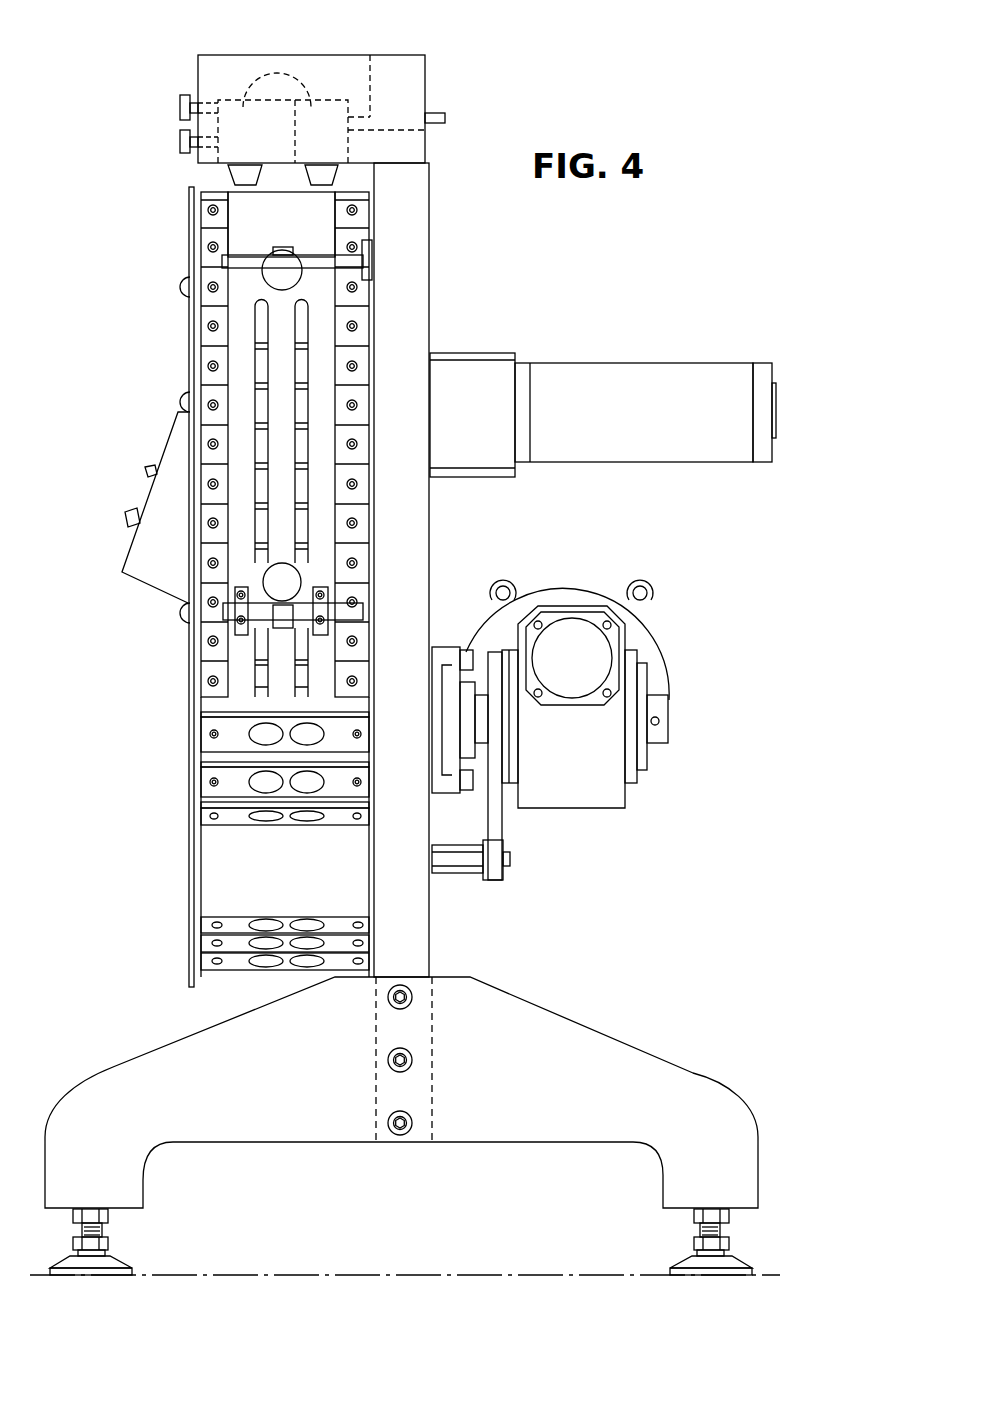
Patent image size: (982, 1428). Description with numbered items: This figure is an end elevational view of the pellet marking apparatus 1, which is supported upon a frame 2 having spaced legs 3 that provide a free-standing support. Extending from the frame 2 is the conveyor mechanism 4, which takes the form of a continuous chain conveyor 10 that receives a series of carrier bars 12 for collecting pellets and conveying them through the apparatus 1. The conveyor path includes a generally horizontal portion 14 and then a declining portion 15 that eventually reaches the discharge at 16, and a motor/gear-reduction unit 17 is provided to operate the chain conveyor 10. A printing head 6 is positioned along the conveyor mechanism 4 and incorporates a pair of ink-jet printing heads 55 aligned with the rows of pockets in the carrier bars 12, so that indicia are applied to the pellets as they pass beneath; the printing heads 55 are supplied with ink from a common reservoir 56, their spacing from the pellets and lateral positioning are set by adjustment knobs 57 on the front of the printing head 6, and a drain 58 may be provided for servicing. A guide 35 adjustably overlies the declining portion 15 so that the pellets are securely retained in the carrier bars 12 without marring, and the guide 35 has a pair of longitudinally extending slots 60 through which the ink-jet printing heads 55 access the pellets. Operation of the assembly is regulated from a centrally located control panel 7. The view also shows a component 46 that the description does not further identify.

The pellet marking apparatus 1 is at (556, 234).
The frame 2 is at (418, 256).
The legs 3 is at (535, 1010).
The conveyor mechanism 4 is at (453, 536).
The printing head 6 is at (244, 44).
The control panel 7 is at (114, 574).
The chain conveyor 10 is at (184, 657).
The carrier bars 12 is at (210, 212).
The horizontal portion 14 is at (184, 178).
The declining portion 15 is at (170, 395).
The discharge 16 is at (215, 862).
The motor/gear-reduction unit 17 is at (598, 808).
The guide 35 is at (240, 238).
The perforated plates 46 is at (215, 752).
The ink-jet printing heads 55 is at (277, 84).
The common reservoir 56 is at (399, 64).
The adjustment knobs 57 is at (180, 103).
The drain 58 is at (445, 118).
The slots 60 is at (312, 400).